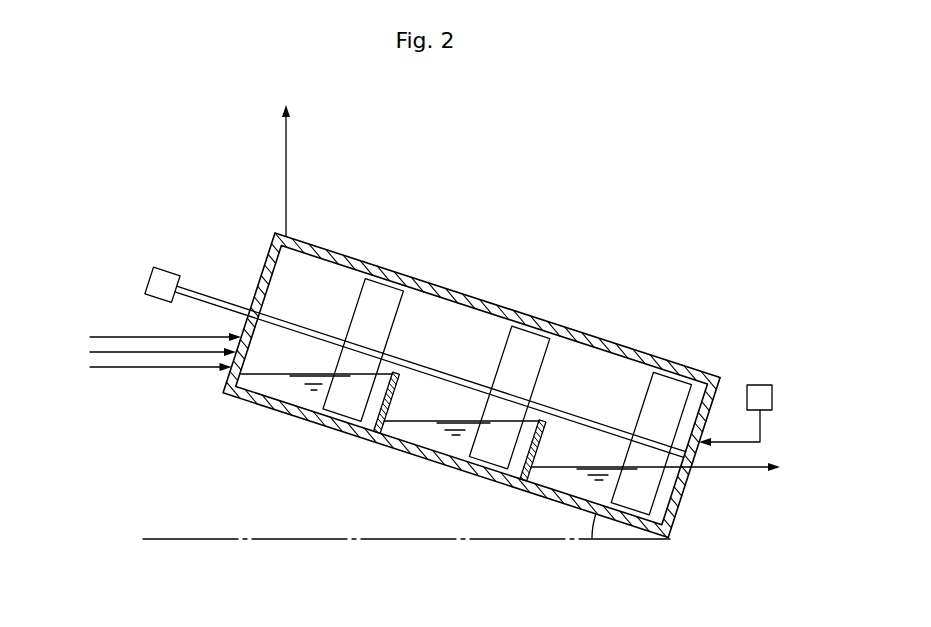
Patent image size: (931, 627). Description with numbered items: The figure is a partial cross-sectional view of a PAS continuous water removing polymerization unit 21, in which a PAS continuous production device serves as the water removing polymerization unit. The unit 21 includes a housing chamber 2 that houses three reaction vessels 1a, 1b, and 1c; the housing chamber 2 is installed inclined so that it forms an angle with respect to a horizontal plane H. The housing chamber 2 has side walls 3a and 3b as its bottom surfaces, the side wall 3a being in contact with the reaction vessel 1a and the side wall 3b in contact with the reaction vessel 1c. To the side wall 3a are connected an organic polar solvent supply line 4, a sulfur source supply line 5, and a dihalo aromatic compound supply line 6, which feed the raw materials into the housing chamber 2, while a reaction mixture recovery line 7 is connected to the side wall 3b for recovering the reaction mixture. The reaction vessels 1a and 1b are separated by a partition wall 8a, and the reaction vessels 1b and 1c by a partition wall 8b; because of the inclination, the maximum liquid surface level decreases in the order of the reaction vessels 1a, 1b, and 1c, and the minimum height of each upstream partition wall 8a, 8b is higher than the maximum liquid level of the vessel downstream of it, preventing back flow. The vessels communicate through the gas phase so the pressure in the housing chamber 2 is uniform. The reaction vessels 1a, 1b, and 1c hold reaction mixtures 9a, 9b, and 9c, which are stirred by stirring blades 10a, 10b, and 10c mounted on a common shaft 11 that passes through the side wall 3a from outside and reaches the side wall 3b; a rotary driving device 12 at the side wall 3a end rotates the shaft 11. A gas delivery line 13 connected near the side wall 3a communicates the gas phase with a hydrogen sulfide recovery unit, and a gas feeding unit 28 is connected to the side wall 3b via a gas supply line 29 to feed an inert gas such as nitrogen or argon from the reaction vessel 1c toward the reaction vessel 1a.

The reaction vessel 1a is at (310, 268).
The reaction vessel 1b is at (463, 325).
The reaction vessel 1c is at (581, 360).
The housing chamber 2 is at (700, 355).
The side wall 3a is at (267, 270).
The side wall 3b is at (682, 507).
The organic polar solvent supply line 4 is at (90, 337).
The sulfur source supply line 5 is at (90, 352).
The dihalo aromatic compound supply line 6 is at (90, 367).
The reaction mixture recovery line 7 is at (745, 468).
The partition wall 8a is at (380, 416).
The partition wall 8b is at (522, 464).
The reaction mixture 9a is at (295, 394).
The reaction mixture 9b is at (435, 438).
The reaction mixture 9c is at (548, 481).
The stirring blade 10a is at (379, 298).
The stirring blade 10b is at (518, 340).
The stirring blade 10c is at (662, 388).
The shaft 11 is at (210, 291).
The rotary driving device 12 is at (166, 266).
The gas delivery line 13 is at (292, 143).
The PAS continuous water removing polymerization unit 21 is at (570, 135).
The gas feeding unit 28 is at (760, 385).
The gas supply line 29 is at (761, 432).
The horizontal plane H is at (383, 541).